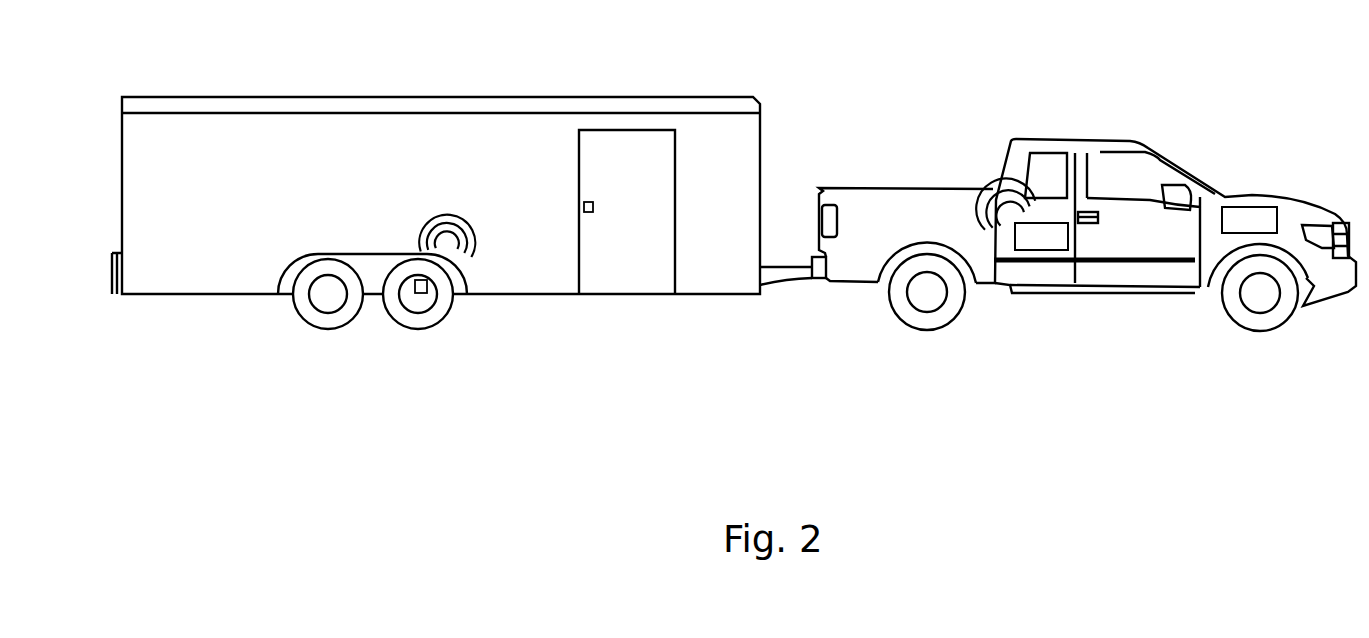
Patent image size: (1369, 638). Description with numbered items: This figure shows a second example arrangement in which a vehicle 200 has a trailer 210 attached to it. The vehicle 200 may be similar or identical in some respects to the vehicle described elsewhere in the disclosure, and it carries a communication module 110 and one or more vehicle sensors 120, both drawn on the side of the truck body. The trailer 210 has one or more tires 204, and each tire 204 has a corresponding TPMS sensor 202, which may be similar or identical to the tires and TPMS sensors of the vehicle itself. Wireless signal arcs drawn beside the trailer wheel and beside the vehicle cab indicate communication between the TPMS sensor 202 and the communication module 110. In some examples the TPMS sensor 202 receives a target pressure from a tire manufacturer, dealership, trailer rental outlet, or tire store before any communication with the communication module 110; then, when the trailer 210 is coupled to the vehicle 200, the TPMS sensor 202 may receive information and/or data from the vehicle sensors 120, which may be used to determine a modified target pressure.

The vehicle 200 is at (1084, 228).
The trailer 210 is at (462, 217).
The TPMS sensor 202 is at (420, 298).
The tire 204 is at (388, 315).
The communication module 110 is at (1041, 236).
The vehicle sensor 120 is at (1249, 220).